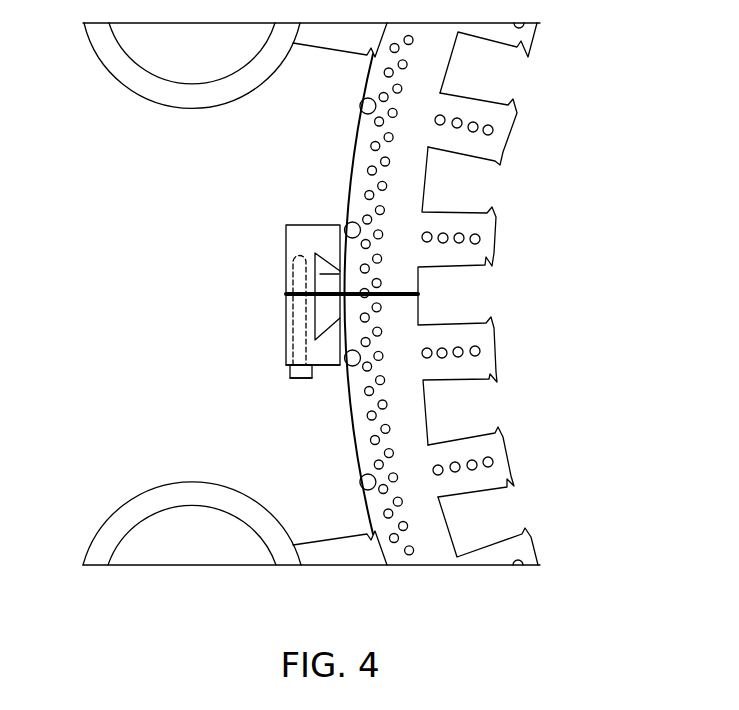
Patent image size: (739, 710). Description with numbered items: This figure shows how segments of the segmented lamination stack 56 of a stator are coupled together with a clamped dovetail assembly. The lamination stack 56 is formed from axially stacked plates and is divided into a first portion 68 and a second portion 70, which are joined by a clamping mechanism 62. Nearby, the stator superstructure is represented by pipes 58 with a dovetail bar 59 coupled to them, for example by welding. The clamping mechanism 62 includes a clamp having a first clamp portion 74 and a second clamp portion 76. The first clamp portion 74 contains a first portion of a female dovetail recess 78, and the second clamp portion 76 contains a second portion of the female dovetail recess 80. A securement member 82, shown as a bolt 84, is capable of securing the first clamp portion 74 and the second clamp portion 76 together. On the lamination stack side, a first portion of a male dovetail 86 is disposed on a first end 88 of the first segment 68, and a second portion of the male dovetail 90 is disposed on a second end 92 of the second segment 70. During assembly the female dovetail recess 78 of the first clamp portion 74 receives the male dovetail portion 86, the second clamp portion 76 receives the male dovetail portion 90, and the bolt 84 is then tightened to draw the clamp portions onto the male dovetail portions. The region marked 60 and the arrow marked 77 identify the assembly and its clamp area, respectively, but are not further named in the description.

The segmented lamination stack 56 is at (521, 294).
The pipe 58 is at (262, 86).
The dovetail bar 59 is at (331, 58).
The sensor assembly 60 is at (263, 296).
The clamping mechanism 62 is at (289, 190).
The first portion of the segmented lamination stack 68 is at (513, 130).
The second portion of the segmented lamination stack 70 is at (507, 452).
The first clamp portion 74 is at (305, 225).
The second clamp portion 76 is at (320, 366).
The sensor 77 is at (261, 239).
The female dovetail recess 78 is at (325, 274).
The second portion of the female dovetail recess 80 is at (328, 336).
The securement member 82 is at (287, 402).
The bolt 84 is at (302, 379).
The first portion of the male dovetail 86 is at (343, 270).
The first end 88 is at (360, 283).
The second portion of the male dovetail 90 is at (330, 315).
The second end 92 is at (359, 304).